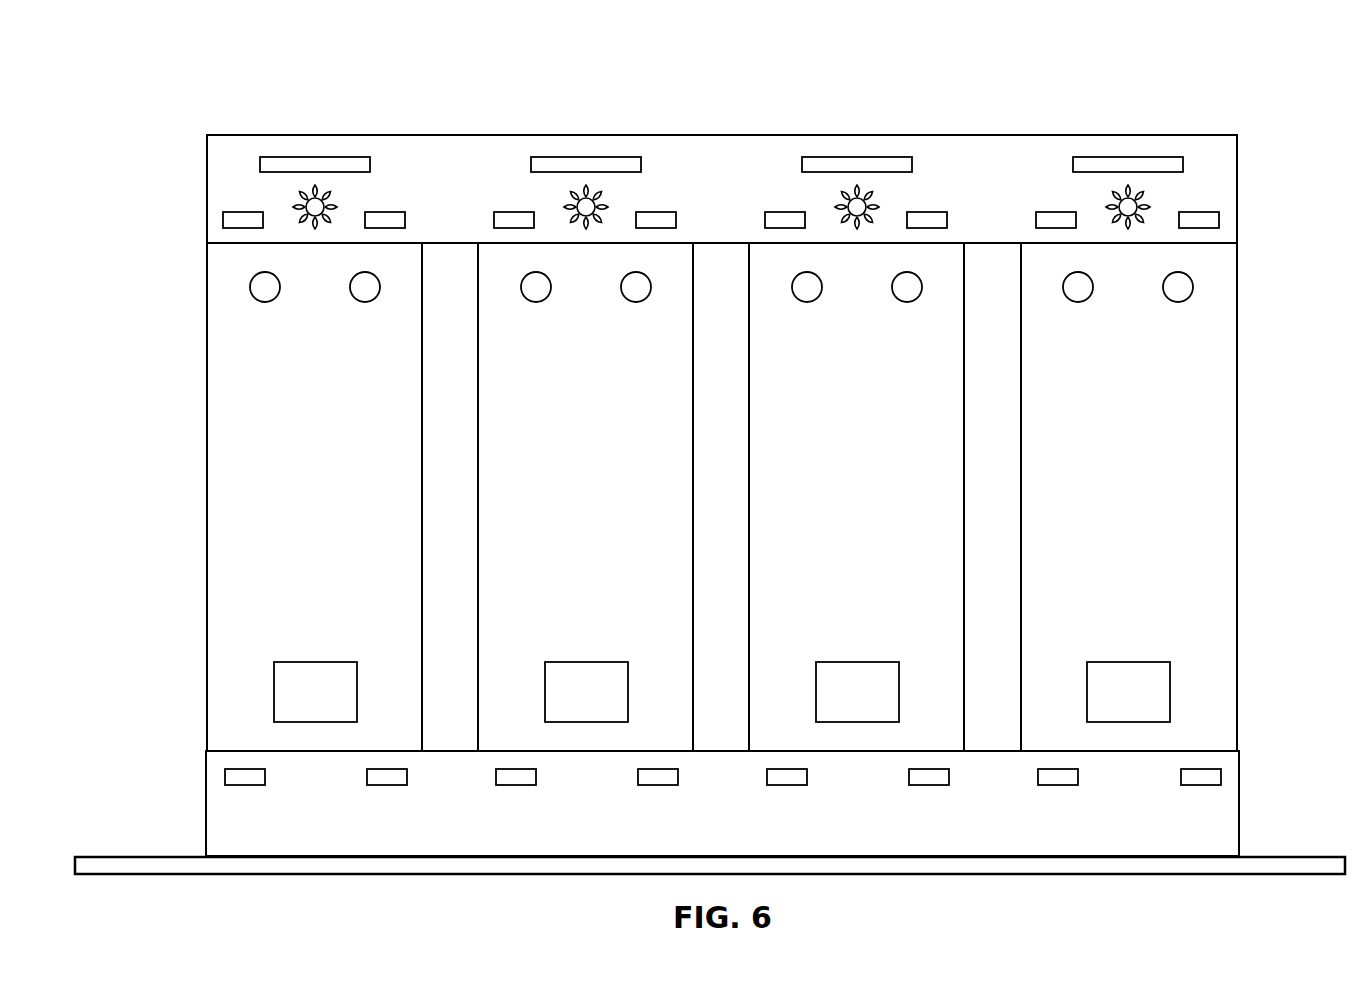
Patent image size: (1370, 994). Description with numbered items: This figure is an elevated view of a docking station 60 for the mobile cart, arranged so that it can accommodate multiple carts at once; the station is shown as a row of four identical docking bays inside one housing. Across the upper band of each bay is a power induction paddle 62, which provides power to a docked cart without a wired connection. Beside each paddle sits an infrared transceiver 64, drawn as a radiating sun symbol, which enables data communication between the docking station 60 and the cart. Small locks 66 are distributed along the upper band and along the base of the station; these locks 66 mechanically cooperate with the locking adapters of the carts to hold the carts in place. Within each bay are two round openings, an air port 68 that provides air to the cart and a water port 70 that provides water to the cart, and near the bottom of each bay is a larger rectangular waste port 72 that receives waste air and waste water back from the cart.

The docking station 60 is at (158, 52).
The power induction paddle 62 is at (316, 157).
The infrared transceiver 64 is at (335, 205).
The lock 66 is at (235, 212).
The air port 68 is at (267, 302).
The water port 70 is at (367, 302).
The waste port 72 is at (316, 662).